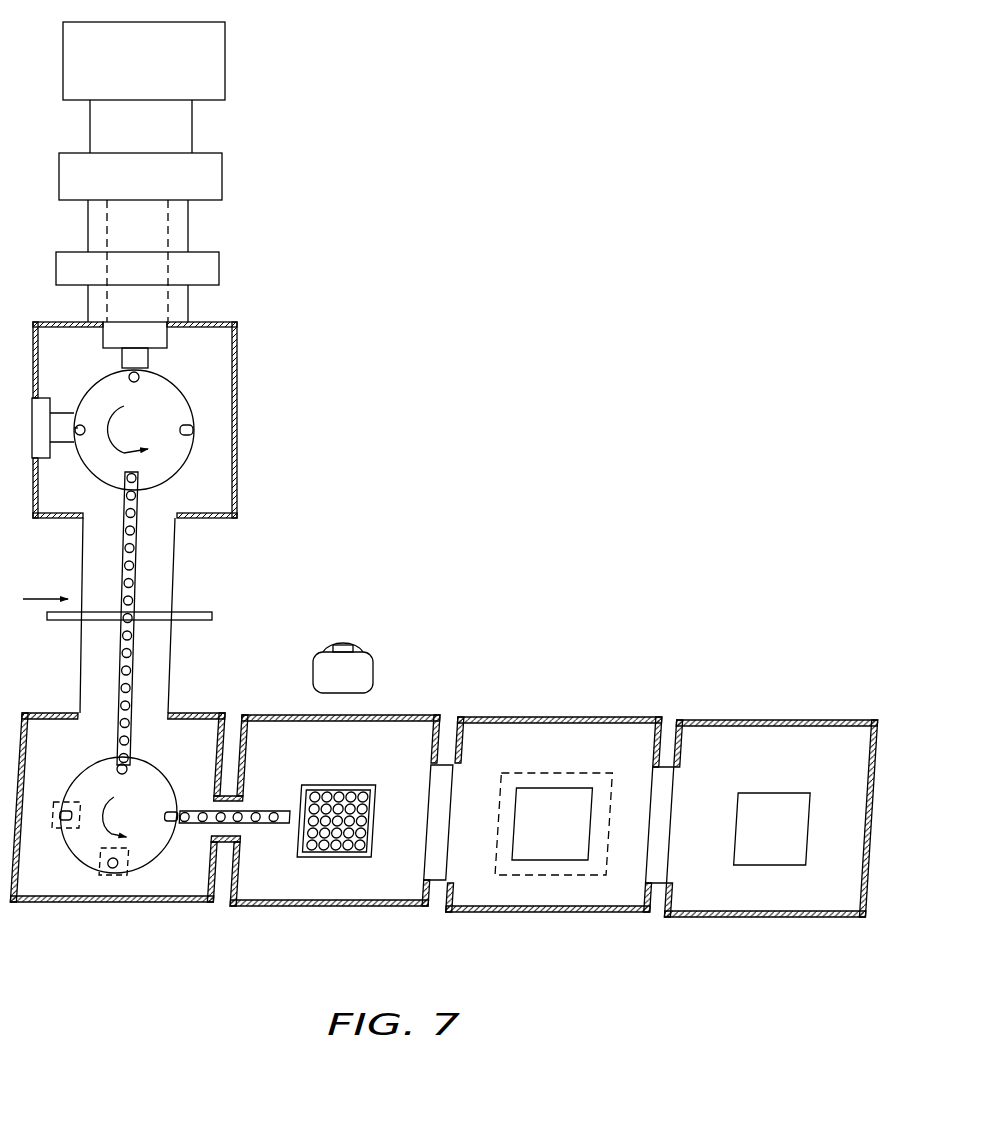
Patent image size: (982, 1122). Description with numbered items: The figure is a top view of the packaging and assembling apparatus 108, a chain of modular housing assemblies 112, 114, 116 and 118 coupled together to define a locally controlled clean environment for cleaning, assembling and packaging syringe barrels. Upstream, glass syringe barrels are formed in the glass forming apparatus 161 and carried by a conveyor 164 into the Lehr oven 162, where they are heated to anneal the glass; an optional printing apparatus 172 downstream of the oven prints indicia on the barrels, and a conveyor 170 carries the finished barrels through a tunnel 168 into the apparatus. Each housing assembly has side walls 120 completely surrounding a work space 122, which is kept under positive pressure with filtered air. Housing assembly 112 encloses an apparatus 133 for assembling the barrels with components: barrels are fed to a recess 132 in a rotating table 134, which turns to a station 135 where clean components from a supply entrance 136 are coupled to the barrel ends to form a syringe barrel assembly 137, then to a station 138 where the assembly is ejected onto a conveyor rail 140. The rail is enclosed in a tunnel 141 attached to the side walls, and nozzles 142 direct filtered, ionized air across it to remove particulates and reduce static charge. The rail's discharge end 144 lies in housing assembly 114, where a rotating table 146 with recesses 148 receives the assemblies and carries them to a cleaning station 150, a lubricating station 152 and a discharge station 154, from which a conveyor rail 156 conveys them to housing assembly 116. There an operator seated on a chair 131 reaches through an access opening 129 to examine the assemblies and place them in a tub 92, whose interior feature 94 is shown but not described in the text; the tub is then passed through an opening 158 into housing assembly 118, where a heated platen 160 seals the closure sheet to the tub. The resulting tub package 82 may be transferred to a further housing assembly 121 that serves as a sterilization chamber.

The tub package 82 is at (545, 862).
The tub 92 is at (312, 865).
The filter openings 94 is at (347, 857).
The packaging and assembling apparatus 108 is at (457, 518).
The housing assembly 112 is at (240, 458).
The housing assembly 114 is at (183, 708).
The housing assembly 116 is at (433, 710).
The housing assembly 118 is at (622, 714).
The side walls 120 is at (238, 385).
The further housing assembly 121 is at (784, 716).
The work space 122 is at (210, 366).
The access opening 129 is at (313, 716).
The chair 131 is at (385, 668).
The recess 132 is at (195, 429).
The apparatus for assembling the syringe barrels 133 is at (107, 396).
The rotating table 134 is at (173, 472).
The station 135 is at (63, 450).
The supply entrance 136 is at (52, 403).
The syringe barrel assembly 137 is at (127, 480).
The station 138 is at (170, 487).
The conveyor rail 140 is at (137, 577).
The tunnel 141 is at (175, 600).
The nozzles 142 is at (205, 622).
The discharge end 144 is at (141, 750).
The rotating table 146 is at (145, 855).
The recesses 148 is at (113, 760).
The cleaning station 150 is at (70, 797).
The lubricating station 152 is at (108, 877).
The discharge station 154 is at (181, 798).
The conveyor rail 156 is at (193, 824).
The opening 158 is at (440, 806).
The heated platen 160 is at (597, 880).
The glass forming apparatus 161 is at (220, 60).
The Lehr oven 162 is at (217, 178).
The conveyor 164 is at (193, 125).
The tunnel 168 is at (188, 302).
The conveyor 170 is at (170, 222).
The printing apparatus 172 is at (215, 272).